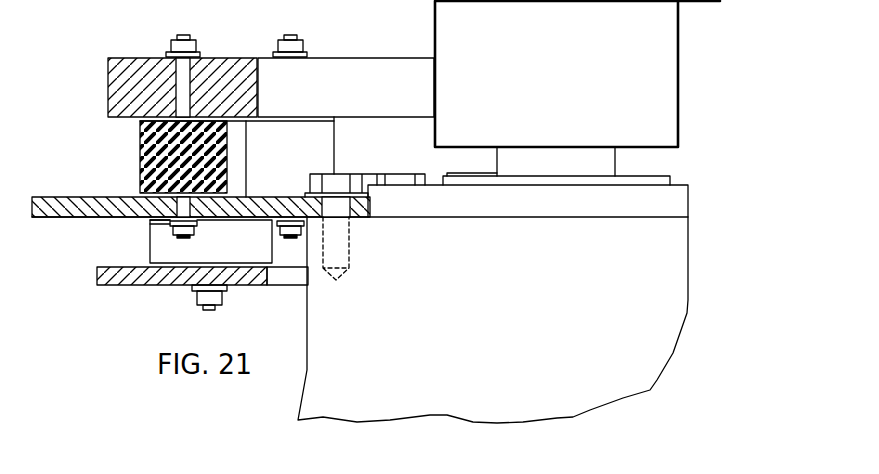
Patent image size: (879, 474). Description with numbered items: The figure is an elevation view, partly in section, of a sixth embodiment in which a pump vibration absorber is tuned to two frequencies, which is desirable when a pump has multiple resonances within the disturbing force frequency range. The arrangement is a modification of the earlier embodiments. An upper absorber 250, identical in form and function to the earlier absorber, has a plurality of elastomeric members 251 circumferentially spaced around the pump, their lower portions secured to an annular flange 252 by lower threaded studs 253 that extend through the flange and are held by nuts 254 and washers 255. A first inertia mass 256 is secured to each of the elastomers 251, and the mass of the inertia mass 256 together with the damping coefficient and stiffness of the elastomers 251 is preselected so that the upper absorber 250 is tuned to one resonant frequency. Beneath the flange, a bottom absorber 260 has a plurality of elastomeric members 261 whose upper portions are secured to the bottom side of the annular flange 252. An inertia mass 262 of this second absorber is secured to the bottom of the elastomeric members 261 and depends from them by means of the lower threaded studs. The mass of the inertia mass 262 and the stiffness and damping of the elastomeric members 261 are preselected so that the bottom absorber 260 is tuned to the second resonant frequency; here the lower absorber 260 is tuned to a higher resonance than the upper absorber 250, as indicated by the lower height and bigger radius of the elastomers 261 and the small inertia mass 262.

The upper absorber 250 is at (108, 85).
The elastomeric members 251 is at (143, 147).
The annular flange 252 is at (68, 202).
The lower threaded studs 253 is at (184, 238).
The nuts 254 is at (172, 231).
The washers 255 is at (168, 221).
The first inertia mass 256 is at (143, 62).
The bottom absorber 260 is at (272, 257).
The elastomeric members 261 is at (258, 227).
The inertia mass 262 is at (105, 277).